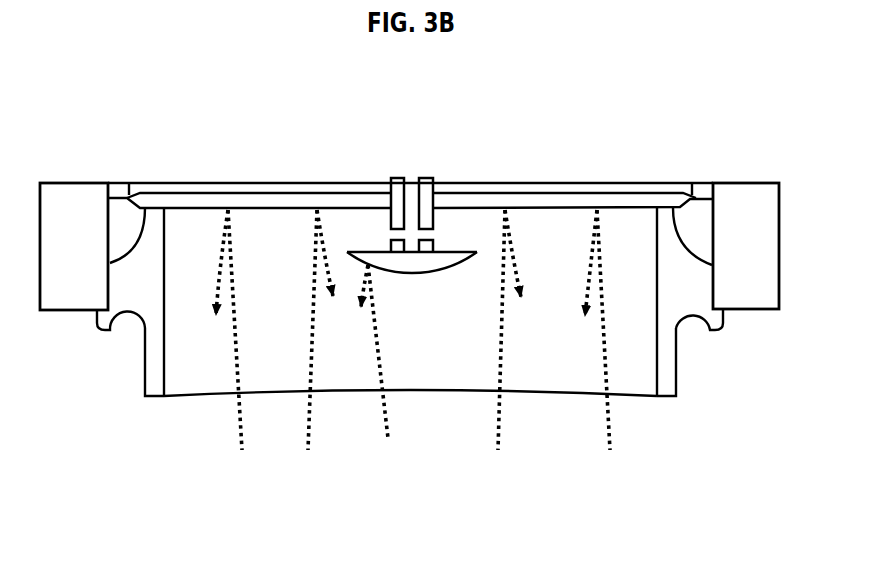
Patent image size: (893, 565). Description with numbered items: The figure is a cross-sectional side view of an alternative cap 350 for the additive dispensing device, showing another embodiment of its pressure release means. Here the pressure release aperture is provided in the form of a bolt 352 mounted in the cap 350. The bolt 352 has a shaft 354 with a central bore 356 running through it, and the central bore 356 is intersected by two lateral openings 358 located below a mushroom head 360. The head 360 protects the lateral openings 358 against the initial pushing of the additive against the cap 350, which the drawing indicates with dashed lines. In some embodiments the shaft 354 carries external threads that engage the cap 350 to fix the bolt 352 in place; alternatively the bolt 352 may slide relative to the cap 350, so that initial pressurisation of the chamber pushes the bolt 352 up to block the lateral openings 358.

The cap 350 is at (603, 183).
The bolt 352 is at (455, 162).
The shaft 354 is at (430, 178).
The central bore 356 is at (409, 168).
The lateral openings 358 is at (376, 235).
The mushroom head 360 is at (428, 272).